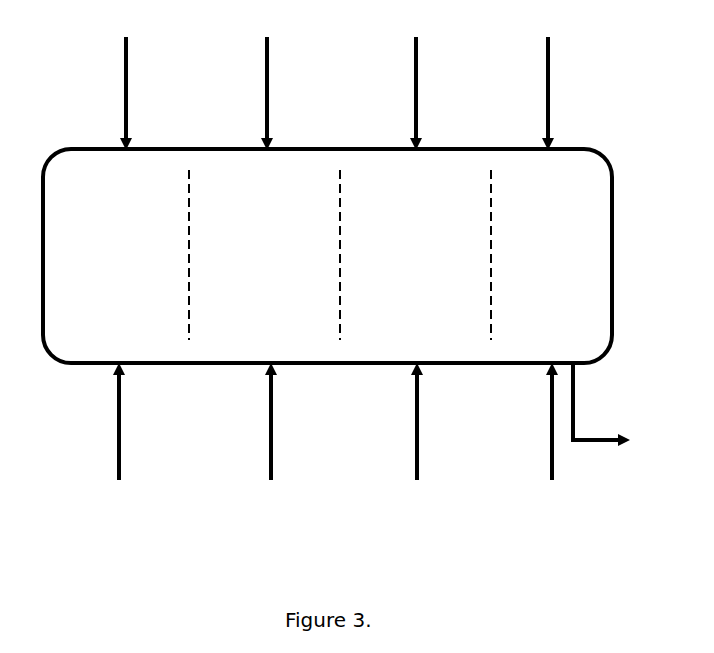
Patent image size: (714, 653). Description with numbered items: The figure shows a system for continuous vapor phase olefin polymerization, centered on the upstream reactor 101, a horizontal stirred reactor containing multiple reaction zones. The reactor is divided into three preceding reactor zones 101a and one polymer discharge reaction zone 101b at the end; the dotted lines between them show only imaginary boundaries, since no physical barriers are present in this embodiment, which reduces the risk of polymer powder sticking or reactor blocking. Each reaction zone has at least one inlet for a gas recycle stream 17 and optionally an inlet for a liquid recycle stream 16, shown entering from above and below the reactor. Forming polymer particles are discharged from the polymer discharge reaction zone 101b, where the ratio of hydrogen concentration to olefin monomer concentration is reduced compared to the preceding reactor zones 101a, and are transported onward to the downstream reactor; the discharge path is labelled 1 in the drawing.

The product stream outlet 1 is at (575, 404).
The liquid (recycle) stream 16 is at (128, 68).
The gas (recycle) stream 17 is at (121, 466).
The upstream reactor 101 is at (614, 216).
The preceding reactor zone 101a is at (294, 255).
The polymer discharge reaction zone 101b is at (531, 255).